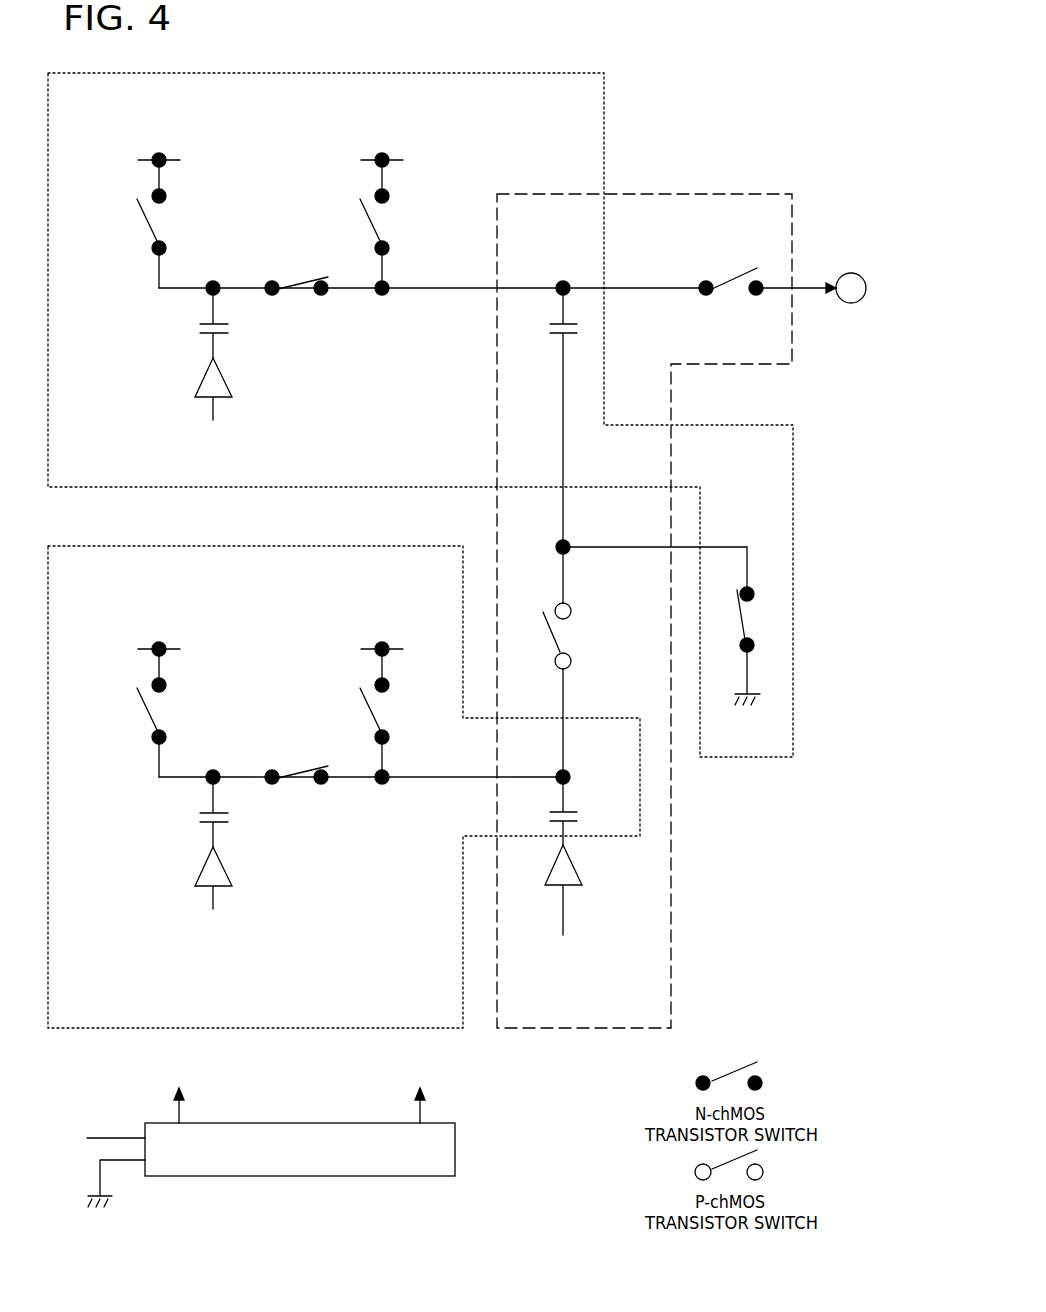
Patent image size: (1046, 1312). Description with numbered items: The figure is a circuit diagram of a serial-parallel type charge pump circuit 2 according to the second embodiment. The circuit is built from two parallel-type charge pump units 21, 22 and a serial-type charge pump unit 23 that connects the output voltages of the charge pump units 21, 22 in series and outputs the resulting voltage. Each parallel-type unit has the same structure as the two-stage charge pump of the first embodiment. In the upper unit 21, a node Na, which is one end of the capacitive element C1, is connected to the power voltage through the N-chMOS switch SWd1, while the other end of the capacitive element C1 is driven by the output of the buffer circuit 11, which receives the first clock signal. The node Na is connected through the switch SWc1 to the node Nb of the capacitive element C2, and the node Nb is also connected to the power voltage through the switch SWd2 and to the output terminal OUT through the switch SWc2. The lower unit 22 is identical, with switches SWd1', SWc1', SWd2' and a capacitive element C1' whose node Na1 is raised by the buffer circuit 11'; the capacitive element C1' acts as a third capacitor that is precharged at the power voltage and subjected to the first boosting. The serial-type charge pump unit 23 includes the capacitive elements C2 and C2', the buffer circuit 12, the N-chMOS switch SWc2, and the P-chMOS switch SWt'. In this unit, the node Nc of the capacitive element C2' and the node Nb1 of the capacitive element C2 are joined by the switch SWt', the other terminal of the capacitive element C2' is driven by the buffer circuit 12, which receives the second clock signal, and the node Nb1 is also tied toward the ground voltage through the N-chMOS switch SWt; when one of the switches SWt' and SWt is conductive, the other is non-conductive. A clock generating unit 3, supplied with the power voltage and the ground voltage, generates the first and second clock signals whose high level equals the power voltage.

The charge pump circuit 2 is at (406, 58).
The parallel-type charge pump unit 21 is at (606, 100).
The parallel-type charge pump unit 22 is at (356, 545).
The serial-type charge pump unit 23 is at (663, 192).
The buffer circuit 11 is at (189, 403).
The buffer circuit 11' is at (189, 892).
The buffer circuit 12 is at (570, 870).
The clock generating unit 3 is at (365, 1122).
The switch SWd1 is at (118, 208).
The switch SWd2 is at (335, 212).
The switch SWc1 is at (293, 261).
The switch SWc2 is at (712, 270).
The switch SWt is at (759, 622).
The switch SWt' is at (595, 662).
The switch SWd1' is at (118, 697).
The switch SWd2' is at (354, 701).
The switch SWc1' is at (293, 750).
The capacitive element C1 is at (181, 323).
The capacitive element C2 is at (544, 417).
The capacitive element C1' is at (179, 812).
The capacitive element C2' is at (595, 811).
The node Na is at (215, 281).
The node Nb is at (564, 280).
The node Nb1 is at (568, 540).
The node Na1 is at (215, 770).
The node Nc is at (569, 771).
The output terminal OUT is at (847, 275).